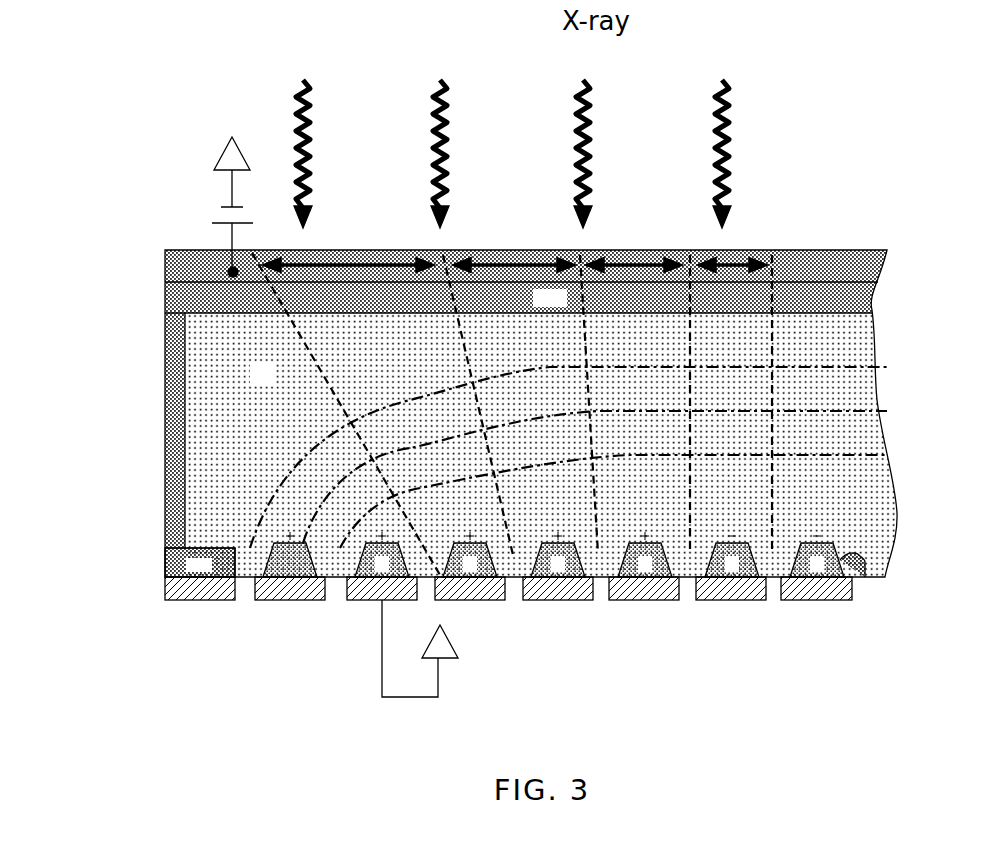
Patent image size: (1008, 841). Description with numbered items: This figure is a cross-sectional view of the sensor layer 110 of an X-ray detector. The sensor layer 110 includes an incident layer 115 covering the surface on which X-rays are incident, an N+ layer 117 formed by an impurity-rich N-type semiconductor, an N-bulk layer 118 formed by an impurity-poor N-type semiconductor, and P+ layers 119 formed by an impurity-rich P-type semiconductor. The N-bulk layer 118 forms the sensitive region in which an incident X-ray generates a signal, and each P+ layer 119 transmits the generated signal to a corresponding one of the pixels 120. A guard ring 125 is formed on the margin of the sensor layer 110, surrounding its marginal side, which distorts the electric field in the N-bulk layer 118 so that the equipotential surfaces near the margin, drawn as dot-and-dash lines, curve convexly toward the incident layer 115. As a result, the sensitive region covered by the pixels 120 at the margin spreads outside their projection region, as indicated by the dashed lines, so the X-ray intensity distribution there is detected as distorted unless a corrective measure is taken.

The sensor layer 110 is at (461, 449).
The incident layer 115 is at (818, 250).
The N+ layer 117 is at (165, 300).
The N-bulk layer 118 is at (185, 372).
The P+ layer 119 is at (862, 566).
The pixel 120 is at (847, 606).
The guard ring 125 is at (355, 603).